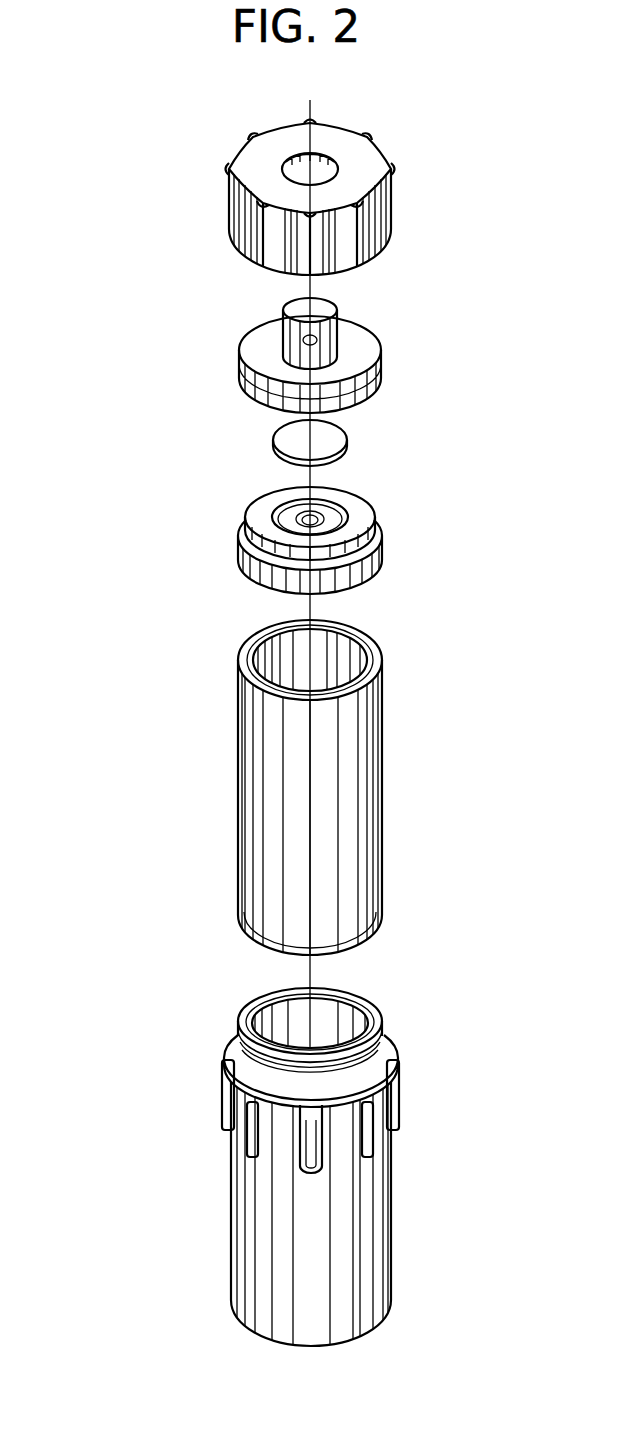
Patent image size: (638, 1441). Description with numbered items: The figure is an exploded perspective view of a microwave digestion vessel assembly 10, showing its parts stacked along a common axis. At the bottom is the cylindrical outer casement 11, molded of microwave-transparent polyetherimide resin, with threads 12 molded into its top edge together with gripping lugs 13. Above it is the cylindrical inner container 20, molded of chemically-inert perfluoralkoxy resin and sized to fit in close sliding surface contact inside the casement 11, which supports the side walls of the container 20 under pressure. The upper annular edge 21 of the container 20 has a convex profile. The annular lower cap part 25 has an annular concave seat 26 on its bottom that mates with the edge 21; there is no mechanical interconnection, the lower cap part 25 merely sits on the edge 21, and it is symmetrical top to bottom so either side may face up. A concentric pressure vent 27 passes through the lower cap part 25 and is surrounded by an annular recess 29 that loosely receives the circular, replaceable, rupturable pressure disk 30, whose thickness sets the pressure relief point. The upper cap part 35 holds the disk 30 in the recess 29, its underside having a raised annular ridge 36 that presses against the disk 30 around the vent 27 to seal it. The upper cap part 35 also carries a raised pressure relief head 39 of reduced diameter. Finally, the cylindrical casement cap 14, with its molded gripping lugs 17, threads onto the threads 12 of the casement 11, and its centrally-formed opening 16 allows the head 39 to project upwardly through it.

The vessel assembly 10 is at (186, 883).
The outer casement 11 is at (372, 1167).
The threads 12 is at (397, 1056).
The gripping lugs 13 is at (307, 1150).
The casement cap 14 is at (318, 191).
The opening 16 is at (287, 171).
The gripping lugs 17 is at (307, 242).
The inner container 20 is at (370, 787).
The upper annular edge 21 is at (374, 654).
The lower cap part 25 is at (308, 550).
The annular concave seat 26 is at (273, 590).
The pressure vent 27 is at (290, 525).
The annular recess 29 is at (337, 522).
The pressure disk 30 is at (335, 447).
The upper cap part 35 is at (311, 342).
The annular ridge 36 is at (260, 392).
The pressure relief head 39 is at (292, 312).